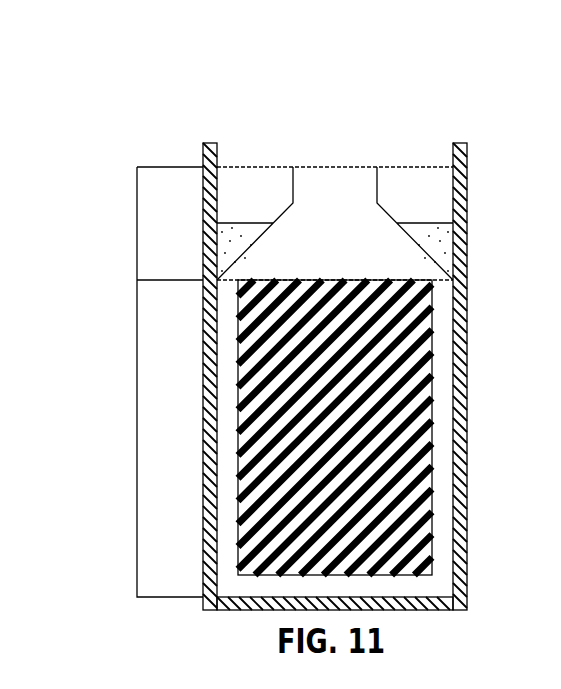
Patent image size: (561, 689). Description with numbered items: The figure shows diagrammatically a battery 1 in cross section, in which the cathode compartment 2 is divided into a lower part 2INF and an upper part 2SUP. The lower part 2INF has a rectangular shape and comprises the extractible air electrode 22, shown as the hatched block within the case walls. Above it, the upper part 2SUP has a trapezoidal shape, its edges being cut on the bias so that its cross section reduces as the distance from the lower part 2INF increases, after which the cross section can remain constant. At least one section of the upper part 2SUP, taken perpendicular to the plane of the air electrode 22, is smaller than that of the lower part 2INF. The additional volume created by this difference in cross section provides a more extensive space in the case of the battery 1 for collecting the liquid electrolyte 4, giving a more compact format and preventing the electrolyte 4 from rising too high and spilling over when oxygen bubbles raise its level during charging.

The battery 1 is at (215, 118).
The cathode compartment 2 is at (336, 166).
The electrolyte 4 is at (441, 233).
The air electrode 22 is at (432, 437).
The upper part 2SUP is at (137, 223).
The lower part 2INF is at (137, 435).